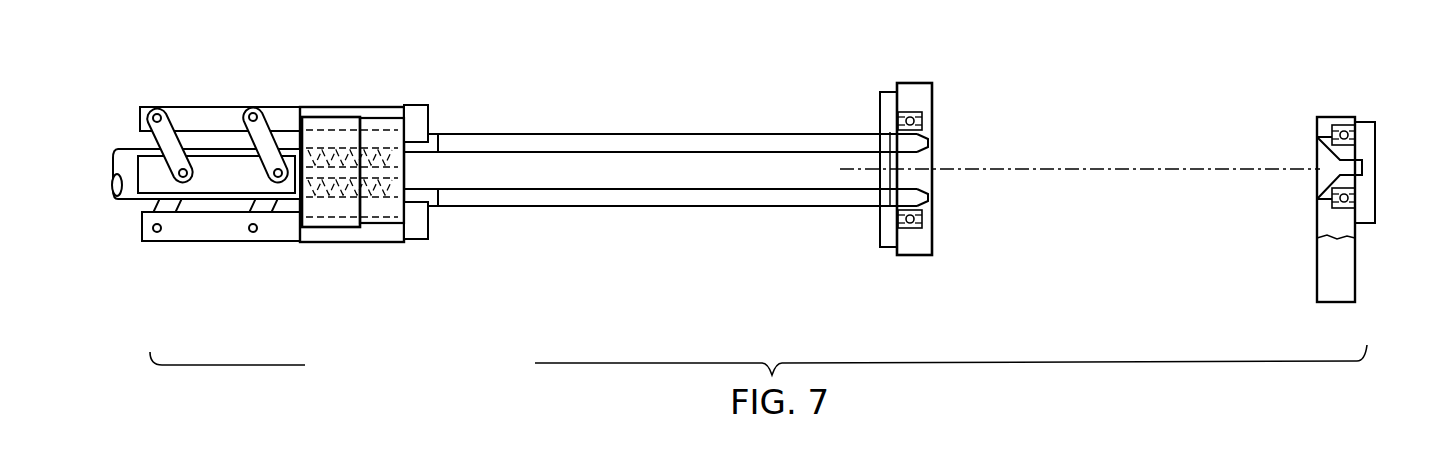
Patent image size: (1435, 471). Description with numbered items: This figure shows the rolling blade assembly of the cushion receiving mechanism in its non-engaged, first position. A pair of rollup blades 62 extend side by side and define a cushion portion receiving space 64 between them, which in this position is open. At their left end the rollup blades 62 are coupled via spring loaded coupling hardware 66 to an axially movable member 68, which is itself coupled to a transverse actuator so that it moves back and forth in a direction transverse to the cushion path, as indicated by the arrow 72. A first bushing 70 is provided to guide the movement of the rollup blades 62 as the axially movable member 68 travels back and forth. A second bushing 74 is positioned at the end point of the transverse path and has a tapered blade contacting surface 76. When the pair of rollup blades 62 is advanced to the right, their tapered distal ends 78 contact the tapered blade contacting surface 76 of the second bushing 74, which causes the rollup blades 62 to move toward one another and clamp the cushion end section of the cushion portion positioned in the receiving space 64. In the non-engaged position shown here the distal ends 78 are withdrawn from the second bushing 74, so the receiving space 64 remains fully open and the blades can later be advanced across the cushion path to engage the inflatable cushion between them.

The rollup blades 62 is at (526, 133).
The cushion portion receiving space 64 is at (596, 184).
The spring loaded coupling hardware 66 is at (223, 251).
The axially movable member 68 is at (116, 200).
The first bushing 70 is at (931, 124).
The arrow 72 is at (653, 263).
The second bushing 74 is at (1359, 150).
The tapered blade contacting surface 76 is at (1316, 185).
The tapered distal ends 78 is at (932, 141).